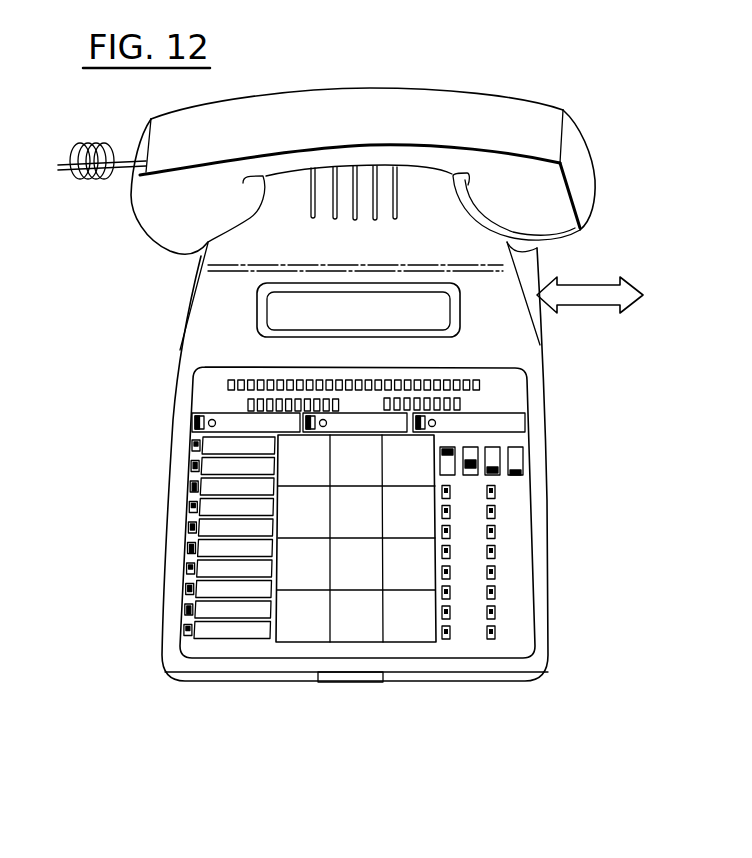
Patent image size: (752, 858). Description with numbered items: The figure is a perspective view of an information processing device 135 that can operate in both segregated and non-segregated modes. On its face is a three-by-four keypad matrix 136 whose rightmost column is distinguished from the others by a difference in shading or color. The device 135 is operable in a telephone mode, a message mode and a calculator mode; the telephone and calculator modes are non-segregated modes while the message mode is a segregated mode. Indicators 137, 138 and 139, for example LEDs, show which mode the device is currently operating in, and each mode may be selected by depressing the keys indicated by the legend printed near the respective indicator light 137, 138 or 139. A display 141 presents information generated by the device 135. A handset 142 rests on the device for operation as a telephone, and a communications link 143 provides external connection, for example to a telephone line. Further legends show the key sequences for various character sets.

The information processing device 135 is at (140, 518).
The keypad matrix 136 is at (310, 647).
The indicator 137 is at (213, 419).
The indicator 138 is at (326, 418).
The indicator 139 is at (440, 409).
The display 141 is at (413, 292).
The handset 142 is at (132, 218).
The communications link 143 is at (582, 283).